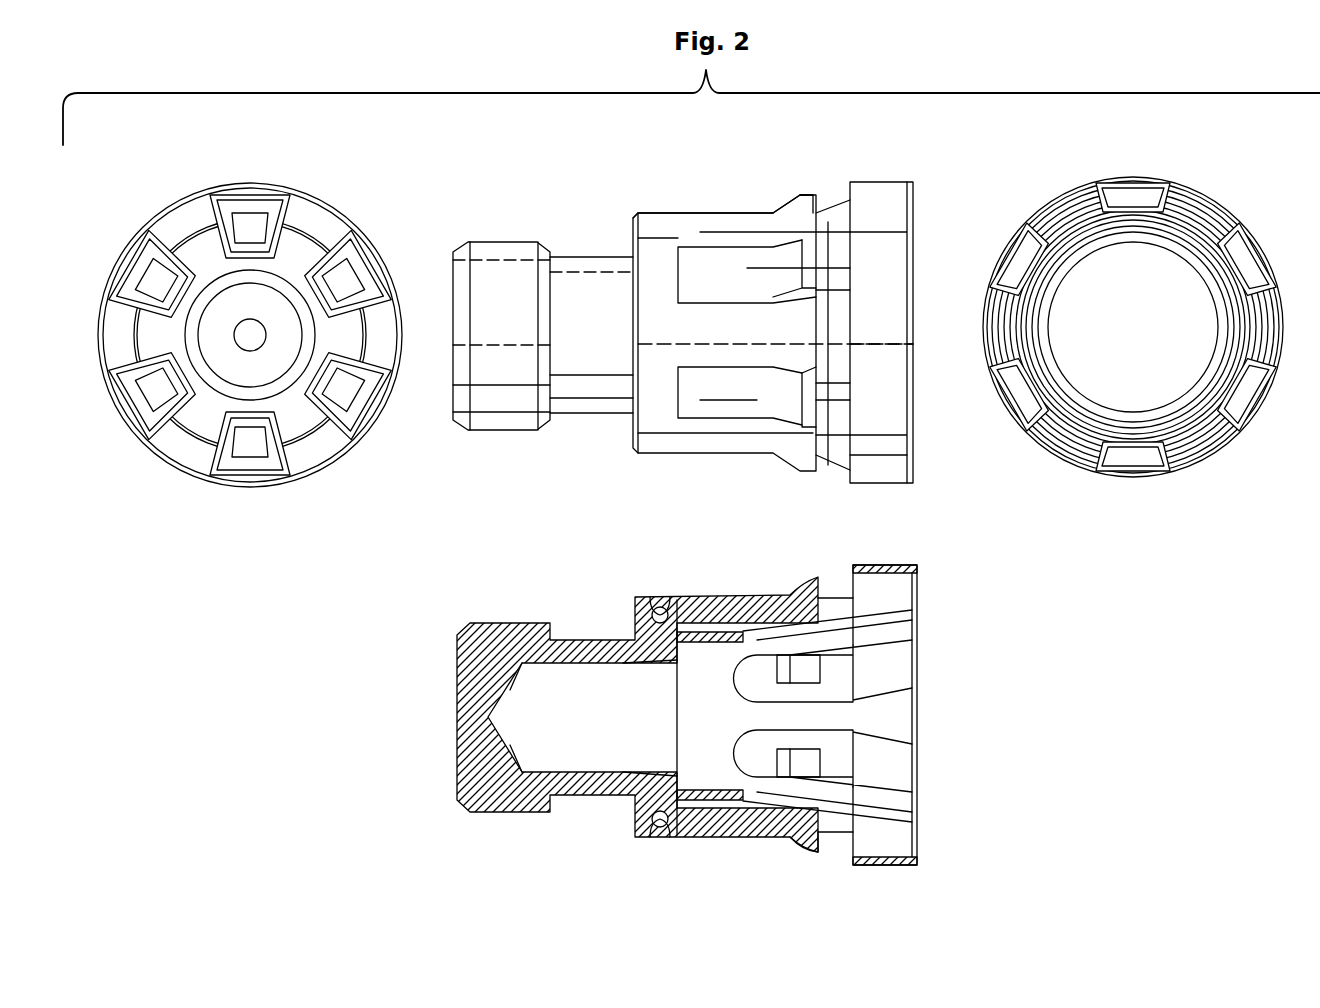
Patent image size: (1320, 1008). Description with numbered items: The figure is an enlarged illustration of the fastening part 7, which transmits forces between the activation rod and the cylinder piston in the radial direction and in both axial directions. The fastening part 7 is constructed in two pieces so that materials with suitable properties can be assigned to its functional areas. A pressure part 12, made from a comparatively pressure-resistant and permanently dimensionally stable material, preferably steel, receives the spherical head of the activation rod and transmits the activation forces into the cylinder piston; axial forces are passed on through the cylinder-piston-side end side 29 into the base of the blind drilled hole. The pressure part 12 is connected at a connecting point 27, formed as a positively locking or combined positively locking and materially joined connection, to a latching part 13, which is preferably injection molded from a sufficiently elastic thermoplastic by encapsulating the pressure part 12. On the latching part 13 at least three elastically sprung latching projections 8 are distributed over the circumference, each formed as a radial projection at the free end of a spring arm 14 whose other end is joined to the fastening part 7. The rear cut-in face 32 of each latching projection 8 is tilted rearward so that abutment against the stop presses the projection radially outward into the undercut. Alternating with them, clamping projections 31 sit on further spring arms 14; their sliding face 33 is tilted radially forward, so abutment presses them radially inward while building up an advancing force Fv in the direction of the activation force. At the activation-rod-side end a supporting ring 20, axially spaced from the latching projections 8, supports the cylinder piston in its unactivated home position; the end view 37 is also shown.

The fastening part 7 is at (655, 192).
The latching projection 8 is at (808, 255).
The pressure part 12 is at (273, 365).
The latching part 13 is at (322, 223).
The spring arm 14 is at (728, 270).
The supporting ring 20 is at (895, 195).
The connecting point 27 is at (655, 621).
The cylinder-piston-side end side 29 is at (455, 290).
The clamping projection 31 is at (810, 192).
The rear cut-in face 32 is at (133, 280).
The sliding face 33 is at (160, 393).
The end view 37 is at (1221, 134).
The advancing force Fv is at (810, 467).